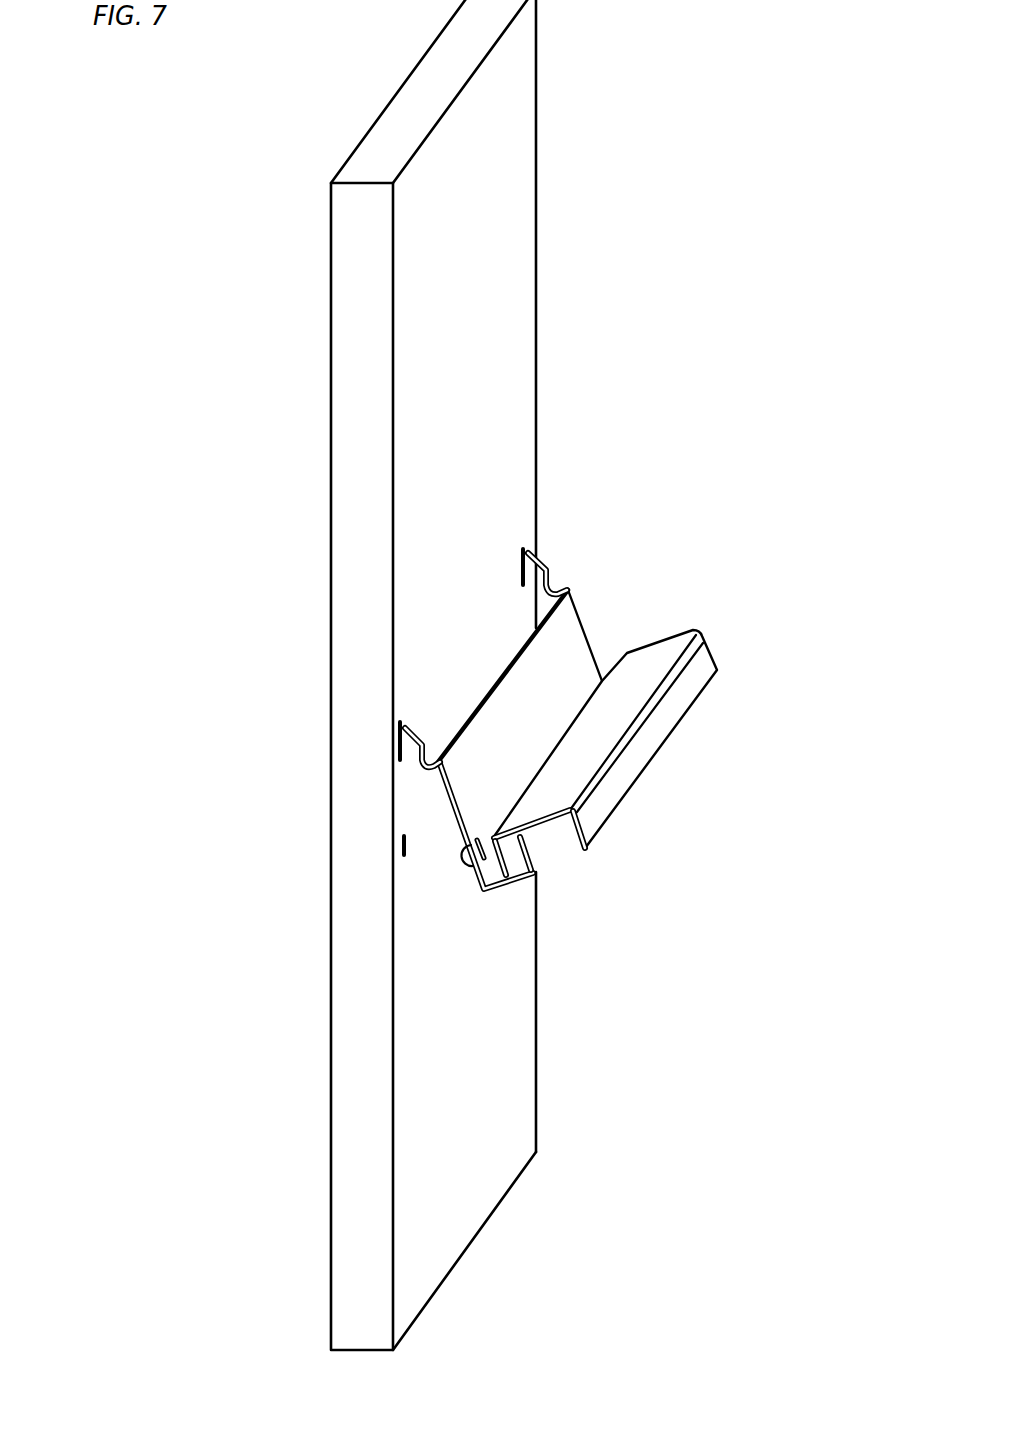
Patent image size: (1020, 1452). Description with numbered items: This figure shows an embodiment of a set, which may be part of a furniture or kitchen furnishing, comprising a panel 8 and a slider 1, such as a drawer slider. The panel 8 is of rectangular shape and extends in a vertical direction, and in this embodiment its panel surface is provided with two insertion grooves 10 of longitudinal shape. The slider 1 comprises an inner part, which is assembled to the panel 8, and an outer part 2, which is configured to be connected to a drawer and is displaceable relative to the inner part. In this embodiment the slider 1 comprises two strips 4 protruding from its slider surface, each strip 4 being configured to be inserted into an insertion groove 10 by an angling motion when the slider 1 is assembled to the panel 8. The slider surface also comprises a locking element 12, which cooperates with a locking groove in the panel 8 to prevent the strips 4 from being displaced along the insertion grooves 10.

The slider 1 is at (595, 699).
The outer part 2 is at (597, 815).
The strip 4 is at (547, 562).
The panel 8 is at (343, 1162).
The insertion groove 10 is at (522, 553).
The locking element 12 is at (461, 848).